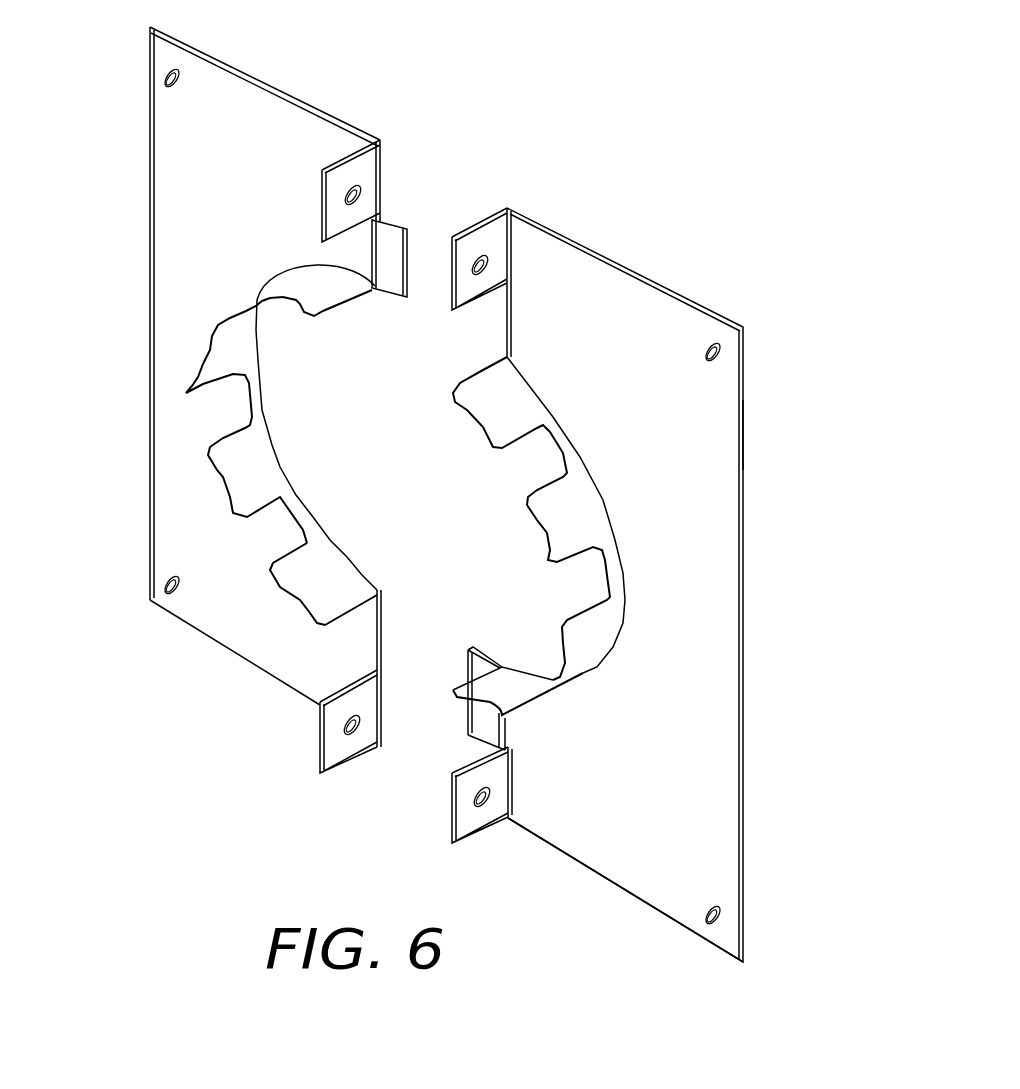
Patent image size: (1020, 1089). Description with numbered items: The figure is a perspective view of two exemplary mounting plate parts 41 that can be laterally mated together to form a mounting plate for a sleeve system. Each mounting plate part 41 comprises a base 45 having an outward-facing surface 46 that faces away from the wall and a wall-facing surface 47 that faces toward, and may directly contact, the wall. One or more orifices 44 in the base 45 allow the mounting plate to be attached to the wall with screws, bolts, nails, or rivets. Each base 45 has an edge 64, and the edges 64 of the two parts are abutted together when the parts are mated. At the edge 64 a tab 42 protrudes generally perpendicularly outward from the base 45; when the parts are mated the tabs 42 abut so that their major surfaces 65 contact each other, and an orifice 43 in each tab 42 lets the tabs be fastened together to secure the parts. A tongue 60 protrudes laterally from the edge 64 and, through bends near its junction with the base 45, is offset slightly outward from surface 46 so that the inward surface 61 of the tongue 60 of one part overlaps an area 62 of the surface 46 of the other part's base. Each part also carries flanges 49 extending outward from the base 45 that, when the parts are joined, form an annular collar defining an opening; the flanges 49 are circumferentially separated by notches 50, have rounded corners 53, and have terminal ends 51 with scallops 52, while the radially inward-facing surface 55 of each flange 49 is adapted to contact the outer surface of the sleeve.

The mounting plate part 41 is at (310, 110).
The tab 42 is at (340, 750).
The orifice 43 is at (487, 805).
The orifice 44 is at (718, 350).
The base 45 is at (162, 553).
The outward-facing surface 46 is at (178, 184).
The wall-facing surface 47 is at (705, 405).
The flange 49 is at (583, 510).
The notch 50 is at (590, 578).
The terminal end 51 is at (217, 478).
The scallop 52 is at (293, 593).
The rounded corner 53 is at (185, 392).
The radially inward-facing surface 55 is at (332, 584).
The tongue 60 is at (388, 247).
The inward surface of tongue 61 is at (423, 273).
The area of surface 62 is at (537, 328).
The edge 64 is at (507, 326).
The major surface of tab 65 is at (360, 740).